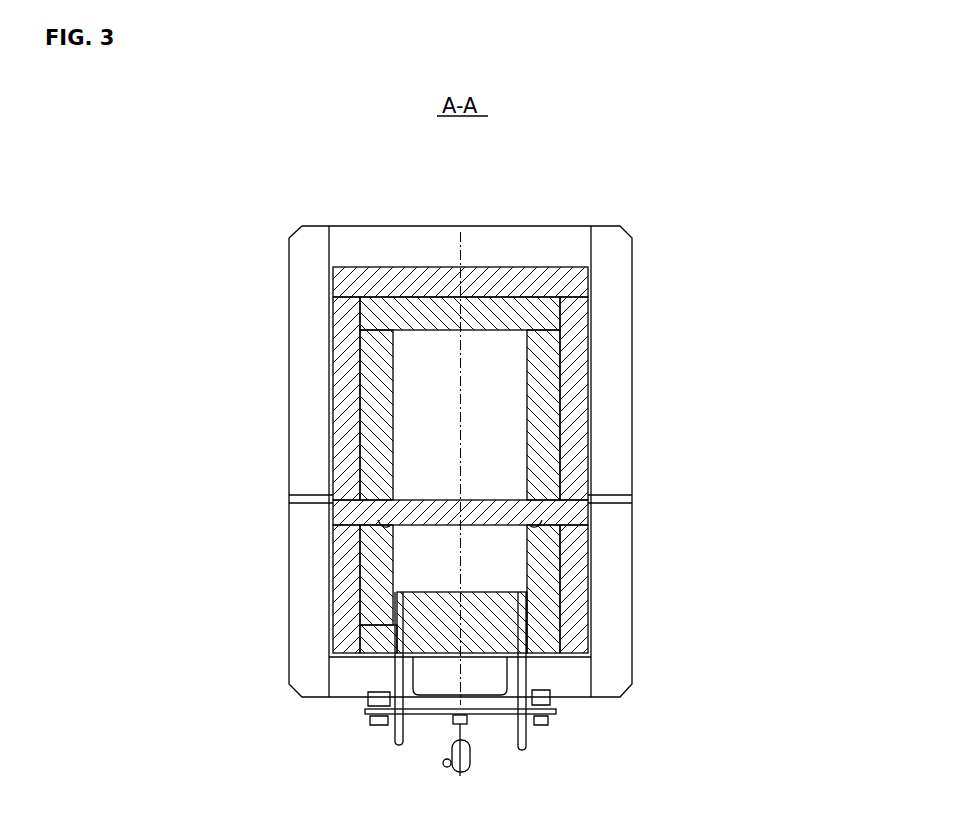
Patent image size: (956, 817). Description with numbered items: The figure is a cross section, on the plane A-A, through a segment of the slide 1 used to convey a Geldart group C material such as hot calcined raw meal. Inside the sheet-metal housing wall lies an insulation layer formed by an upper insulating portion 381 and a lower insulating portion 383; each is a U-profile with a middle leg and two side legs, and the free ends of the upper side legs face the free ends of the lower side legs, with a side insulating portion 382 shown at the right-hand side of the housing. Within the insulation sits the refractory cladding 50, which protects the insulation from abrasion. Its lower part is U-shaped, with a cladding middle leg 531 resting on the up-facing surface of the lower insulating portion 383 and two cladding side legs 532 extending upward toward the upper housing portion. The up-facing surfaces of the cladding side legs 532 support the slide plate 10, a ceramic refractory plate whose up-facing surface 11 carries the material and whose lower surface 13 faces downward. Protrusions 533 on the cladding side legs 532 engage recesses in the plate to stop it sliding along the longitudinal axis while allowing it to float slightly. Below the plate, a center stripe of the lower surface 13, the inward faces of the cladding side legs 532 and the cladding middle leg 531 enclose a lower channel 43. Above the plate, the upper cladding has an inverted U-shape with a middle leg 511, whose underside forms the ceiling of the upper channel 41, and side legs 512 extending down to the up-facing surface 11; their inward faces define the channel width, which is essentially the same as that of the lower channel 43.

The slide 1 is at (215, 188).
The slide plate 10 is at (596, 505).
The up-facing surface 11 is at (477, 492).
The lower surface 13 is at (471, 533).
The upper channel 41 is at (460, 441).
The lower channel 43 is at (454, 572).
The refractory cladding 50 is at (556, 428).
The upper insulating portion 381 is at (345, 287).
The right outer plate 382 is at (580, 347).
The lower insulating portion 383 is at (345, 578).
The middle leg 511 is at (475, 318).
The side legs 512 is at (376, 418).
The cladding middle leg 531 is at (490, 607).
The cladding side legs 532 is at (378, 545).
The protrusions 533 is at (372, 522).